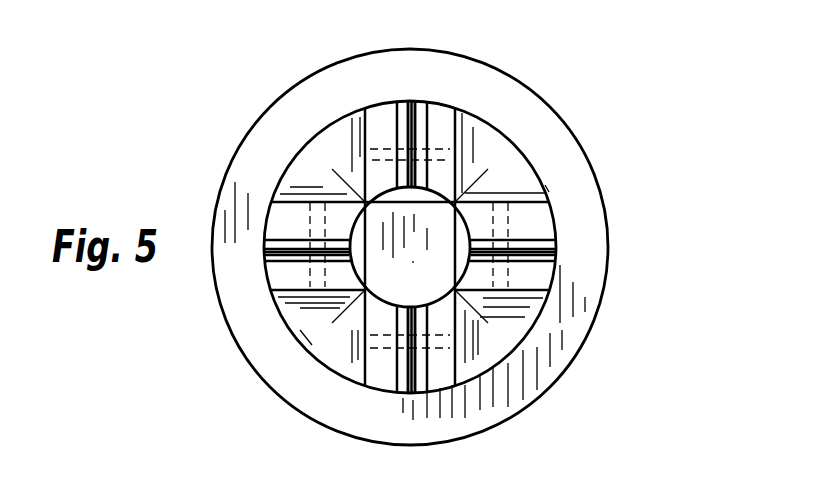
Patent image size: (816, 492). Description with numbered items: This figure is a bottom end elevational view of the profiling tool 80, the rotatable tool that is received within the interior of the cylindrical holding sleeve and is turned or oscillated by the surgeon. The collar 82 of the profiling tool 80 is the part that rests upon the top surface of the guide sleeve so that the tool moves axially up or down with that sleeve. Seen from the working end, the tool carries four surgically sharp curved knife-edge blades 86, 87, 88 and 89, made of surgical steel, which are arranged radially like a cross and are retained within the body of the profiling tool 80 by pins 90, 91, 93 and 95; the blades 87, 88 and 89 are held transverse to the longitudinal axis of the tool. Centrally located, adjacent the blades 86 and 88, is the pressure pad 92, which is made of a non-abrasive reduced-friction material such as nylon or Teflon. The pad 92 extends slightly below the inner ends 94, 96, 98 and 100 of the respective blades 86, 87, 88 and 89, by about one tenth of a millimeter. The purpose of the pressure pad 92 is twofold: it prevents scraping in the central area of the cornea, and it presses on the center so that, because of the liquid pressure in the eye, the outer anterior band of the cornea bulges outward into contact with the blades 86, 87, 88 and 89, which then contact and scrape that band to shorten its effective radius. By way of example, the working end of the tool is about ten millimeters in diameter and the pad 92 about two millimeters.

The profiling tool 80 is at (509, 139).
The collar 82 is at (593, 297).
The curved knife-edge blade 86 is at (539, 239).
The curved knife-edge blade 87 is at (283, 257).
The curved knife-edge blade 88 is at (403, 378).
The curved knife-edge blade 89 is at (414, 121).
The pin 90 is at (548, 190).
The pin 91 is at (352, 367).
The pressure pad 92 is at (451, 228).
The pin 93 is at (300, 200).
The inner end of blade 94 is at (462, 285).
The pin 95 is at (478, 142).
The inner end of blade 96 is at (304, 336).
The inner end of blade 98 is at (385, 348).
The inner end of blade 100 is at (408, 172).